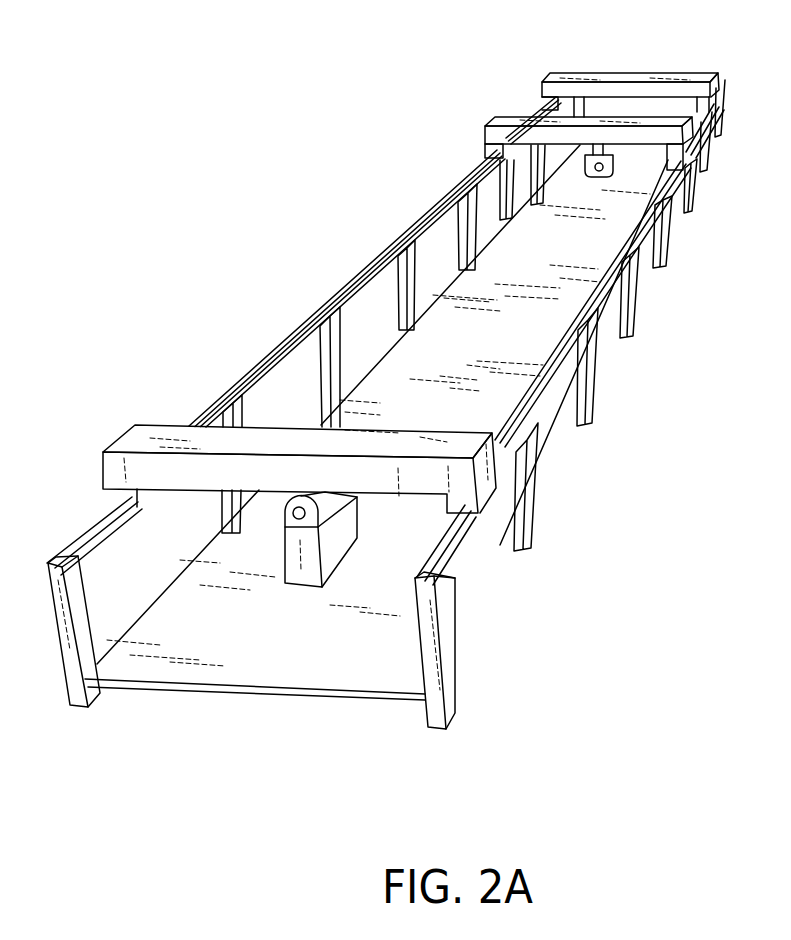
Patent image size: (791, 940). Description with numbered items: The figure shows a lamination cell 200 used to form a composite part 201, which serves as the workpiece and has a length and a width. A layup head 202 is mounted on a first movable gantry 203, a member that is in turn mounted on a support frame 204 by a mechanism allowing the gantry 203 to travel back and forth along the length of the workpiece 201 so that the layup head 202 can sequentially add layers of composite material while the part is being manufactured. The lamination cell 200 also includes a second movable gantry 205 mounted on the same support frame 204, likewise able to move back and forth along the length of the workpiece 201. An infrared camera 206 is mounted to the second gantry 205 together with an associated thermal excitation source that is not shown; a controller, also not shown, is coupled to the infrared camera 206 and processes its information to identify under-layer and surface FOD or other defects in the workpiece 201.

The lamination cell 200 is at (388, 406).
The composite part 201 is at (473, 557).
The layup head 202 is at (307, 583).
The first movable gantry 203 is at (143, 428).
The support frame 204 is at (610, 278).
The second movable gantry 205 is at (667, 120).
The infrared camera 206 is at (583, 163).